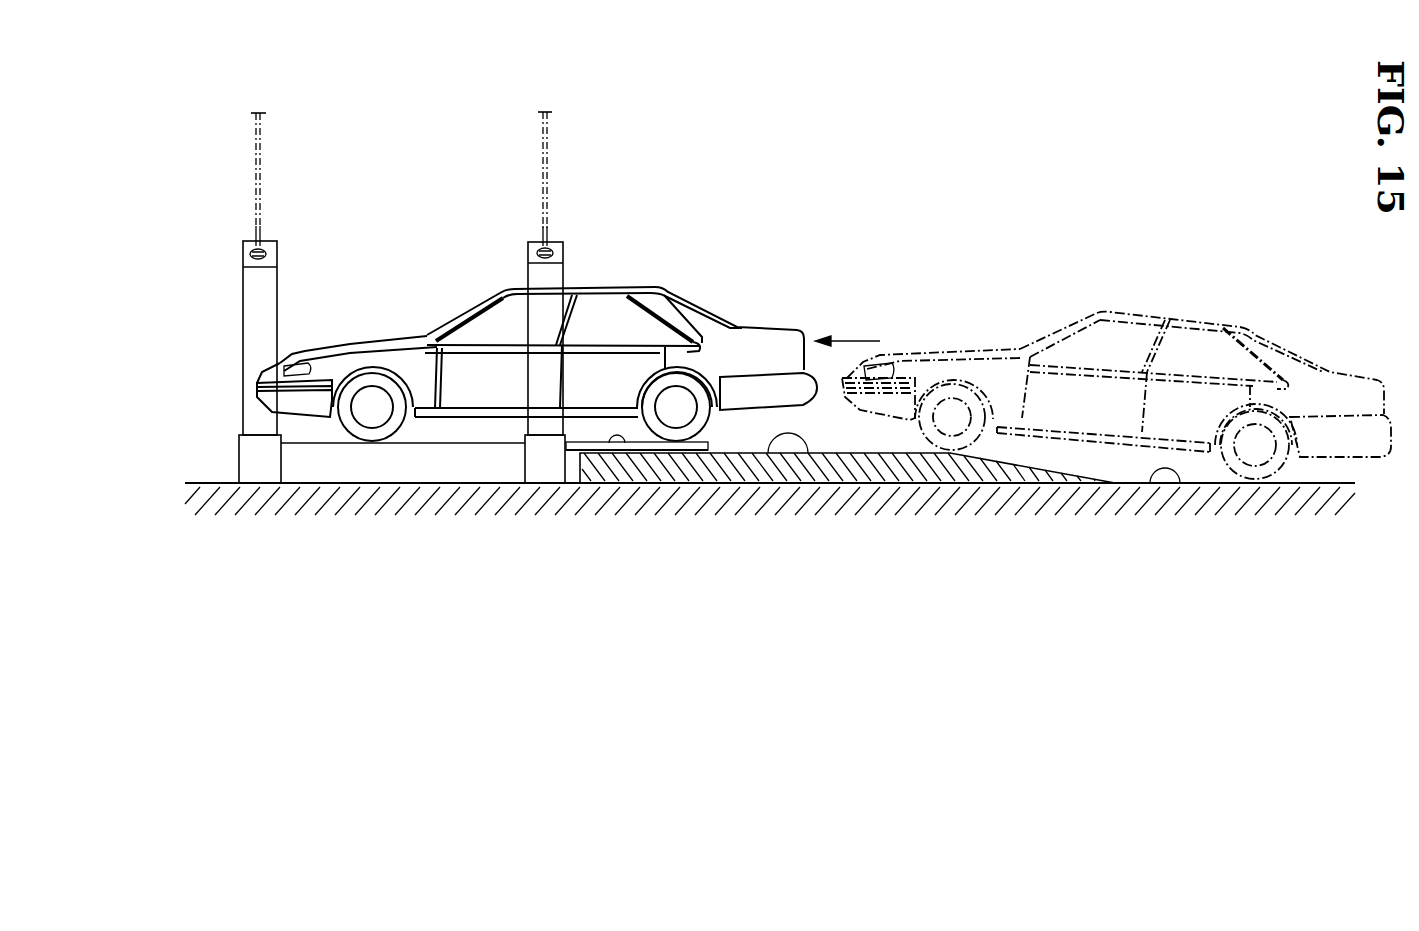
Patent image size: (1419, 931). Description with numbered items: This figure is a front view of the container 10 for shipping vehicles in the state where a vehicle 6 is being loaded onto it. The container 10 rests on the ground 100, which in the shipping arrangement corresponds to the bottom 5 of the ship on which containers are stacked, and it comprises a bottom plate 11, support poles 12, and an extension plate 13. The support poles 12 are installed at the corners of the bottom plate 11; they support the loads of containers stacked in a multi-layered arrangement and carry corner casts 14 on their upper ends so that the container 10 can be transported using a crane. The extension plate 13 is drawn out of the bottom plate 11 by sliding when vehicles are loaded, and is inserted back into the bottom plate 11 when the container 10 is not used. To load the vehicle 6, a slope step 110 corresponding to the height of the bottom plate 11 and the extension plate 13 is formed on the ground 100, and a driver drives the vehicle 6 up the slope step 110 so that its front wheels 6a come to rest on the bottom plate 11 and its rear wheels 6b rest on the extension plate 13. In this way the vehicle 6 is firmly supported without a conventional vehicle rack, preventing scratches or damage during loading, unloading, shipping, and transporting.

The bottom of the ship 5 is at (207, 481).
The container for shipping vehicles 10 is at (190, 190).
The support pole 12 is at (243, 298).
The corner cast 14 is at (277, 257).
The bottom plate 11 is at (399, 468).
The extension plate 13 is at (614, 455).
The slope step 110 is at (818, 485).
The vehicle 6 is at (537, 339).
The front wheel 6a is at (370, 405).
The rear wheel 6b is at (683, 400).
The ground 100 is at (1172, 483).